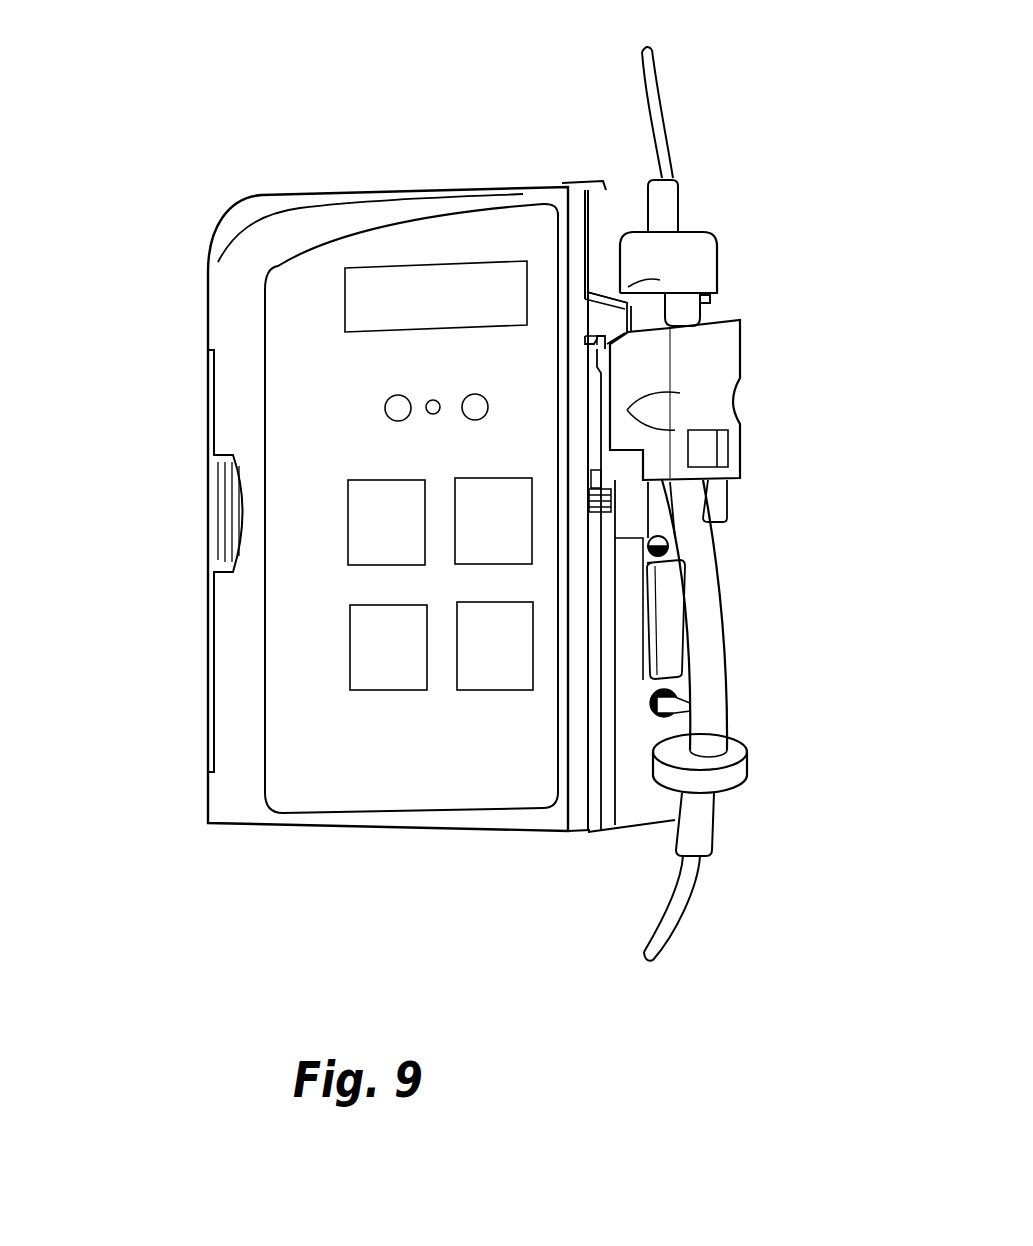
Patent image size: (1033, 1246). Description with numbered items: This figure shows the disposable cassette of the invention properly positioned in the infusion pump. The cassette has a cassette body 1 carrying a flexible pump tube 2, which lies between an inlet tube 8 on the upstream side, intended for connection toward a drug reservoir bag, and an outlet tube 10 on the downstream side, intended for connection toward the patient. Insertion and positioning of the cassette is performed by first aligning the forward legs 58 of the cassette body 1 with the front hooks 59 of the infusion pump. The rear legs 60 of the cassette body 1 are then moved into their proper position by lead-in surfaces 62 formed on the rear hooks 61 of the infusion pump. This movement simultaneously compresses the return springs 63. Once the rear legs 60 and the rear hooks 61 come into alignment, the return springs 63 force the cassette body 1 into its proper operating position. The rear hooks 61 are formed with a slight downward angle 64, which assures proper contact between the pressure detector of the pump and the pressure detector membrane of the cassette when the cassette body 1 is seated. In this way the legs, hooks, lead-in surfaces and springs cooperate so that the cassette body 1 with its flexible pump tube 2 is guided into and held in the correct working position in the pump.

The cassette body 1 is at (748, 380).
The flexible pump tube 2 is at (708, 633).
The inlet tube 8 is at (680, 898).
The outlet tube 10 is at (653, 90).
The forward legs 58 is at (597, 485).
The front hooks 59 is at (632, 502).
The rear legs 60 is at (597, 344).
The rear hooks 61 is at (612, 317).
The lead-in surfaces 62 is at (609, 340).
The return springs 63 is at (606, 510).
The downward angle 64 is at (606, 343).